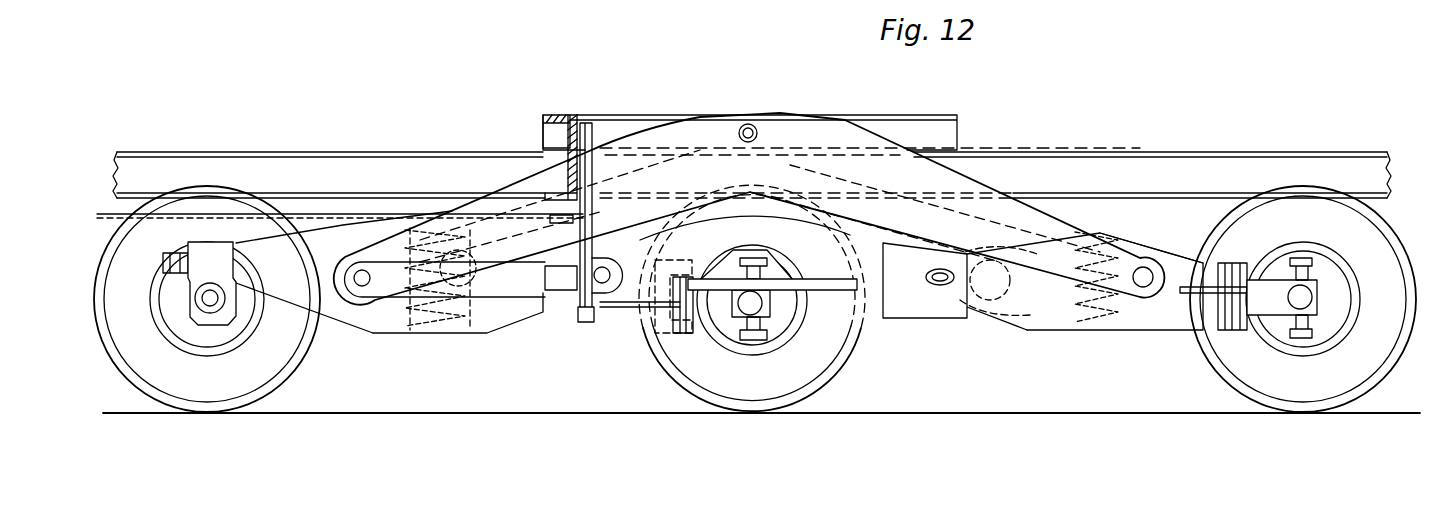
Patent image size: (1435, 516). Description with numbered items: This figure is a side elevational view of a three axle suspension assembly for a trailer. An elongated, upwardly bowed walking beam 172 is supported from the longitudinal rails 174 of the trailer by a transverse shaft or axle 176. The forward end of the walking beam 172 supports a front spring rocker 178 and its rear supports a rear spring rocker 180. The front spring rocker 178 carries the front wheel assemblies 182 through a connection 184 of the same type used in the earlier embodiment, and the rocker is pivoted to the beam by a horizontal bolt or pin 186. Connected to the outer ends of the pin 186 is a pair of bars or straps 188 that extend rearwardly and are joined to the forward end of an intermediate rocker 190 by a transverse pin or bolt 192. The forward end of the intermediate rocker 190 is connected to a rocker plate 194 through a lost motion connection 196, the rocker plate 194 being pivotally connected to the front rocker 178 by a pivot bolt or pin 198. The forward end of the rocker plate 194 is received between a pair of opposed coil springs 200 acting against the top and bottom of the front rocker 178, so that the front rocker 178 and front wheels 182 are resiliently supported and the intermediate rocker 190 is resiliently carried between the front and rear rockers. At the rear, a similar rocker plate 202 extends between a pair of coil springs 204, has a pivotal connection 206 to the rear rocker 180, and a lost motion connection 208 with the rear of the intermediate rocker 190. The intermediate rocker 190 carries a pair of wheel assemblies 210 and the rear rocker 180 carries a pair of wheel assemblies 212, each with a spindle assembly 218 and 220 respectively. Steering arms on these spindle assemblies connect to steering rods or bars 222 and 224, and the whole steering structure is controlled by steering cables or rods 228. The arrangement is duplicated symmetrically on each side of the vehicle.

The walking beam 172 is at (887, 175).
The longitudinal rails 174 is at (985, 165).
The transverse shaft or axle 176 is at (776, 104).
The front spring rocker 178 is at (328, 240).
The rear spring rocker 180 is at (1172, 308).
The front wheel assemblies 182 is at (276, 372).
The connection 184 is at (200, 333).
The horizontal bolt or pin 186 is at (353, 281).
The bars or straps 188 is at (382, 267).
The intermediate rocker 190 is at (889, 298).
The transverse pin or bolt 192 is at (653, 277).
The rocker plate 194 is at (455, 318).
The lost motion connection 196 is at (565, 293).
The pivot bolt or pin 198 is at (517, 313).
The opposed coil springs 200 is at (435, 196).
The rocker plate 202 is at (993, 303).
The coil springs 204 is at (1126, 236).
The pivotal connection 206 is at (1043, 327).
The lost motion connection 208 is at (937, 287).
The wheel assemblies 210 is at (829, 360).
The wheel assemblies 212 is at (1389, 252).
The spindle assembly 218 is at (718, 307).
The spindle assembly 220 is at (1268, 287).
The steering rod or bar 222 is at (625, 307).
The steering rod or bar 224 is at (818, 285).
The steering cables or rods 228 is at (123, 212).